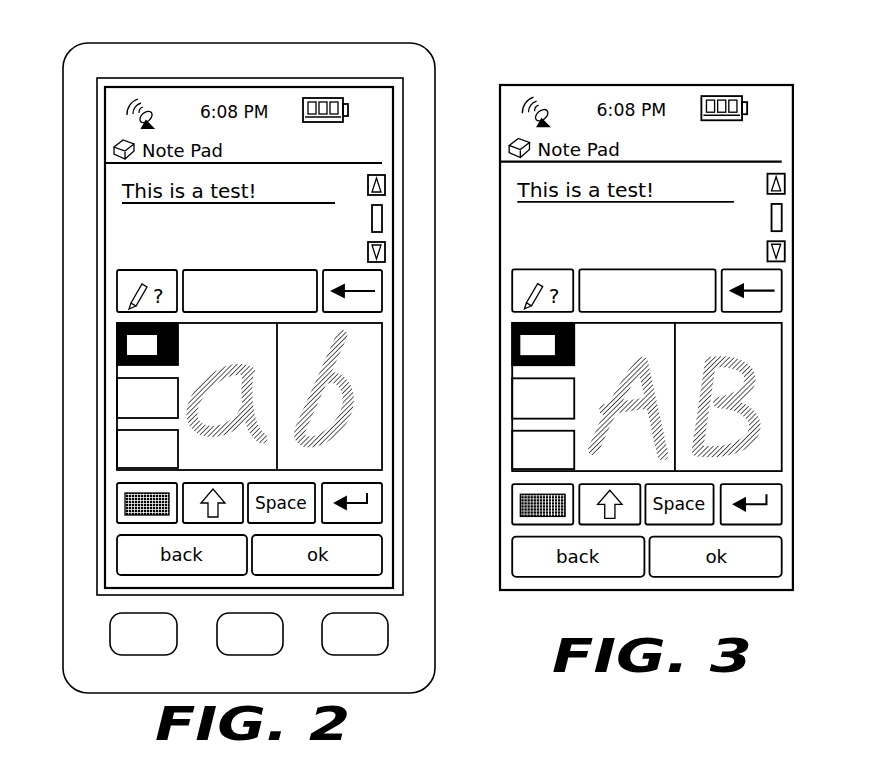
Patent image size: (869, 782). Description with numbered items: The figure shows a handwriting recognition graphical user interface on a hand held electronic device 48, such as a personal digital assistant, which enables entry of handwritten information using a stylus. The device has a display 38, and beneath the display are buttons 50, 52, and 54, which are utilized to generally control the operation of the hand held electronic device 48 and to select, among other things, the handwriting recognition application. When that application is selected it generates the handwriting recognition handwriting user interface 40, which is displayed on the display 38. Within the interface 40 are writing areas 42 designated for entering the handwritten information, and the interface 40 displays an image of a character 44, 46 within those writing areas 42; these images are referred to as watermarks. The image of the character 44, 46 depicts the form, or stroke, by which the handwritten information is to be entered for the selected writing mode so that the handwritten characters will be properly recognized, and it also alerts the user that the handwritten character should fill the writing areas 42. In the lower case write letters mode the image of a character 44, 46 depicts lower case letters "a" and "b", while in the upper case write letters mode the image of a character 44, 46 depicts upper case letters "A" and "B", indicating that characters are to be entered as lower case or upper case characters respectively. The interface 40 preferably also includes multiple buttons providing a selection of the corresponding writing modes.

In FIG. 2, the display 38 is at (100, 118).
In FIG. 2, the handwriting recognition handwriting user interface 40 is at (251, 295).
In FIG. 3, the handwriting recognition handwriting user interface 40 is at (646, 357).
In FIG. 2, the writing areas 42 is at (185, 368).
In FIG. 3, the writing areas 42 is at (647, 397).
In FIG. 2, the image of a character 44 is at (115, 286).
In FIG. 3, the image of a character 44 is at (556, 379).
In FIG. 2, the image of a character 46 is at (389, 388).
In FIG. 3, the image of a character 46 is at (770, 398).
In FIG. 2, the hand held electronic device 48 is at (63, 533).
In FIG. 2, the button 50 is at (128, 655).
In FIG. 2, the button 52 is at (218, 654).
In FIG. 2, the button 54 is at (388, 645).